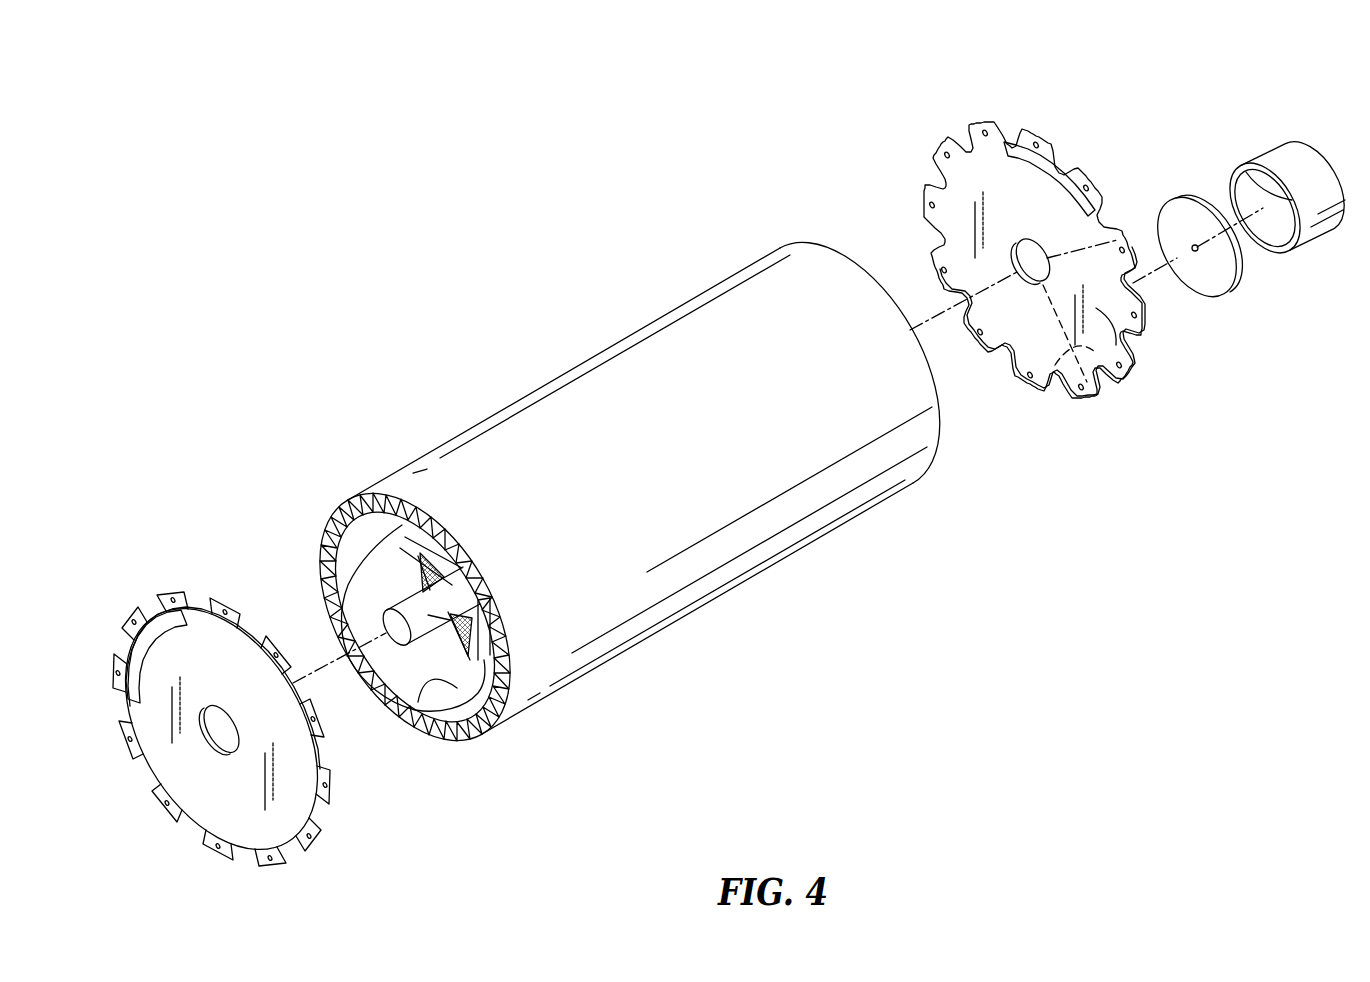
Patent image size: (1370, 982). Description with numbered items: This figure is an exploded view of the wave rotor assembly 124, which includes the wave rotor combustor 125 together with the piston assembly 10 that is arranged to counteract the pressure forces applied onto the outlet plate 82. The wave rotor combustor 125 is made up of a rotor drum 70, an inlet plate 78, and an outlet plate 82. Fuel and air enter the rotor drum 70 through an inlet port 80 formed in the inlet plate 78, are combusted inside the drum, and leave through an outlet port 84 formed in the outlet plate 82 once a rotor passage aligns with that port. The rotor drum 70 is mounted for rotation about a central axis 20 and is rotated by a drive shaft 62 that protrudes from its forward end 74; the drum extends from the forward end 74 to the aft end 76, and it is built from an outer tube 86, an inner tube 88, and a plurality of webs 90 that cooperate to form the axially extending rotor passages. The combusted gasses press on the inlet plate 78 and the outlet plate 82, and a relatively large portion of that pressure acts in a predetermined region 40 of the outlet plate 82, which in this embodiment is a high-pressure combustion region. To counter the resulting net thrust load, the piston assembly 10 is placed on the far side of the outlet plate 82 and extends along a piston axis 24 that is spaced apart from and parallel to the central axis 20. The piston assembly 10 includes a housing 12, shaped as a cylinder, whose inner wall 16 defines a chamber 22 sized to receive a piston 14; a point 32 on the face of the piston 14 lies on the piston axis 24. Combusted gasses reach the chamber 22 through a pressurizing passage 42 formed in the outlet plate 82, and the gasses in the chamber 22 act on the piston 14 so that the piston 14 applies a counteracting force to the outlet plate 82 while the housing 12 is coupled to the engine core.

The piston assembly 10 is at (1222, 100).
The housing 12 is at (1273, 239).
The piston 14 is at (1198, 275).
The inner wall 16 is at (1266, 247).
The central axis 20 is at (330, 672).
The chamber 22 is at (1256, 192).
The piston axis 24 is at (1160, 263).
The center hole 32 is at (1194, 246).
The predetermined region 40 is at (1050, 403).
The pressurizing passage 42 is at (1130, 370).
The drive shaft 62 is at (505, 643).
The rotor drum 70 is at (588, 469).
The forward end 74 is at (300, 550).
The aft end 76 is at (838, 243).
The inlet plate 78 is at (216, 679).
The inlet port 80 is at (145, 640).
The outlet plate 82 is at (1050, 244).
The outlet port 84 is at (1040, 175).
The outer tube 86 is at (590, 650).
The inner tube 88 is at (418, 708).
The webs 90 is at (497, 590).
The wave rotor assembly 124 is at (746, 168).
The wave rotor combustor 125 is at (596, 337).